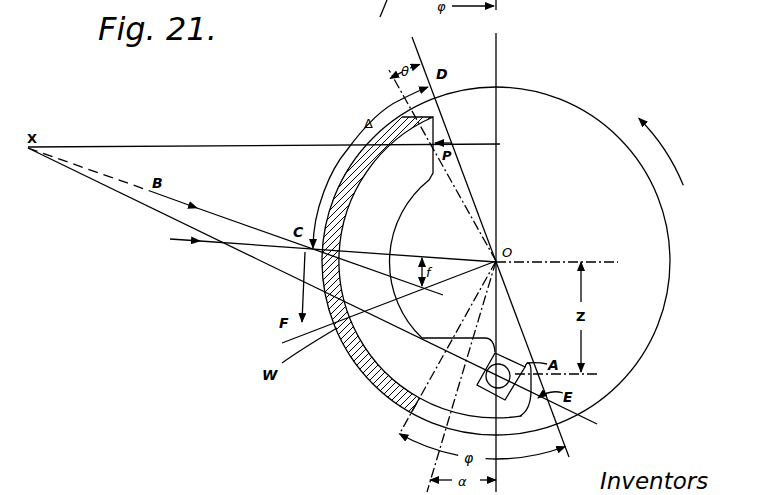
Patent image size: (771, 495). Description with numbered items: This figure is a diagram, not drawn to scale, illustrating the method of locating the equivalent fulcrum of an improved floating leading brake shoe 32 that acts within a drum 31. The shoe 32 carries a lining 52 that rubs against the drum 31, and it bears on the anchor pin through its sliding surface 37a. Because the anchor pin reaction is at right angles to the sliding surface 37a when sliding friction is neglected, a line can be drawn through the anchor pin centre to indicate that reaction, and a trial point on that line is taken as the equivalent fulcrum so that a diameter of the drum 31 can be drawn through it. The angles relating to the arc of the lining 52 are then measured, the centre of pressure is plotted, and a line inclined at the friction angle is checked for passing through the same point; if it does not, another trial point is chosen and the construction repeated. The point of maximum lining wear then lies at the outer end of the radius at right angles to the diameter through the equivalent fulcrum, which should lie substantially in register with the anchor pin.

The rotor circle 31 is at (608, 128).
The shoe 32 is at (385, 358).
The lining 52 is at (355, 352).
The sliding surface of the shoe 37a is at (490, 353).